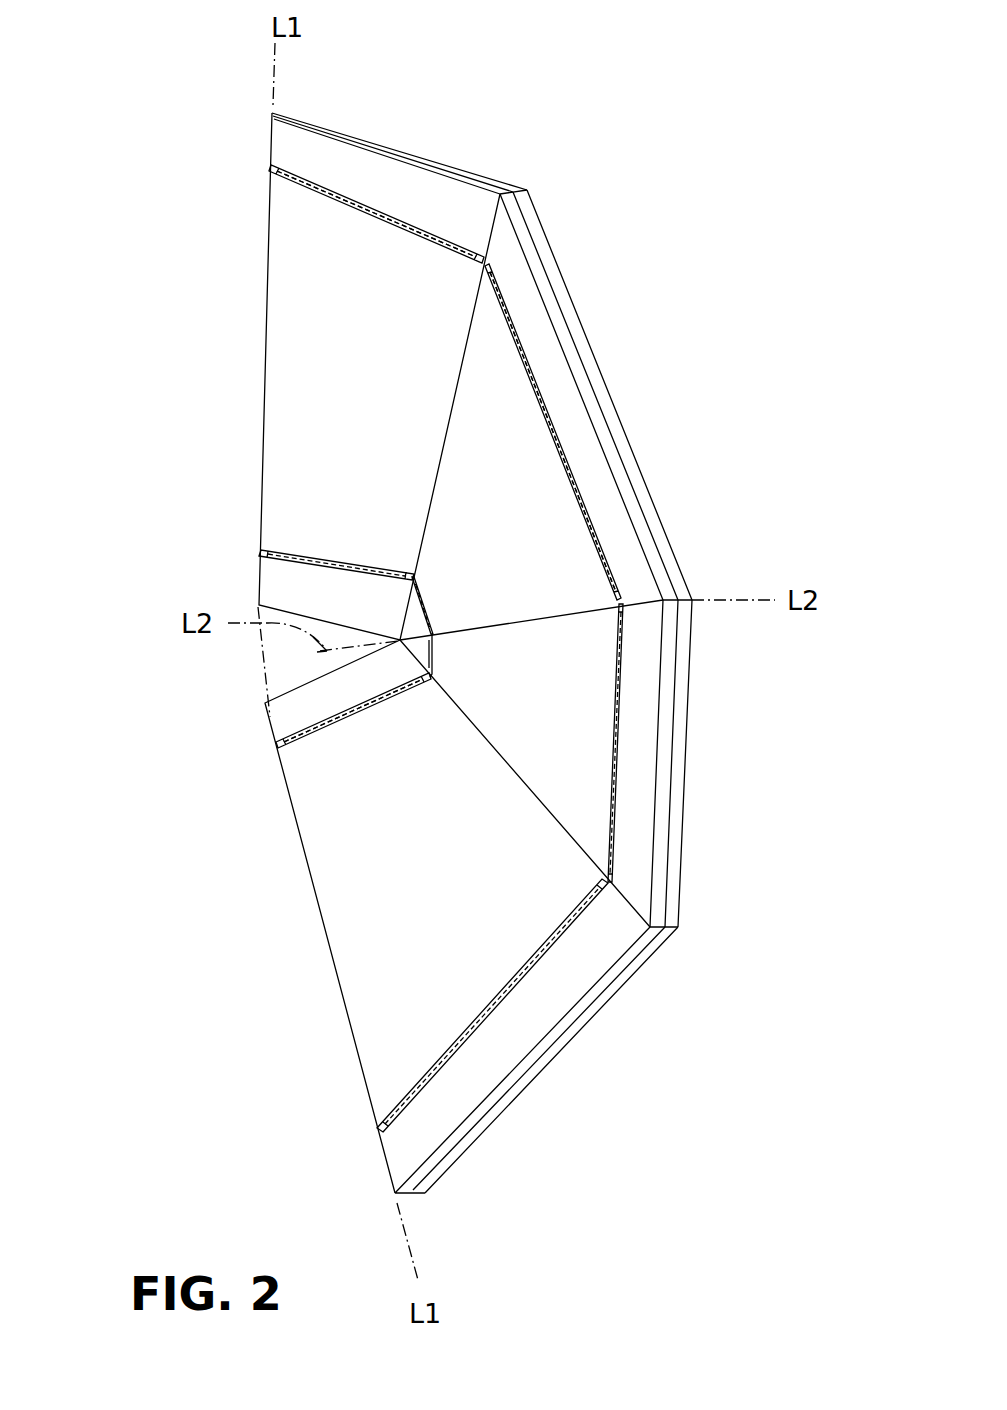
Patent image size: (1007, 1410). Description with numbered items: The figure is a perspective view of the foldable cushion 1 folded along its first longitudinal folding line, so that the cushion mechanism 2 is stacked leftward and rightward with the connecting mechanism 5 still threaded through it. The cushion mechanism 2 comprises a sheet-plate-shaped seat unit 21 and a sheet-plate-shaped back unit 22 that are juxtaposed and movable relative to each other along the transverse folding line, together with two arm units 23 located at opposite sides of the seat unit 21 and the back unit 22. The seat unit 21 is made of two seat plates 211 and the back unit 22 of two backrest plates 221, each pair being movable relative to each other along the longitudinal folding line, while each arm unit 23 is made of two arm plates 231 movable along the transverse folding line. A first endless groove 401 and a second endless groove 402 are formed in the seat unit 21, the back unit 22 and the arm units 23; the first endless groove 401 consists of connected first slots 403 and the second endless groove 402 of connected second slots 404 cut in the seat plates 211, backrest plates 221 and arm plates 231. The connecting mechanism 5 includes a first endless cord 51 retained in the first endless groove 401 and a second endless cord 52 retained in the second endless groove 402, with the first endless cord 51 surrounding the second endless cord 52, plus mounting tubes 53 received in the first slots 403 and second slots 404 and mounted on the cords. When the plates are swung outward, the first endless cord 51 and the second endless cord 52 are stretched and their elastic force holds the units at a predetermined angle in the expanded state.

The foldable cushion 1 is at (113, 153).
The cushion mechanism 2 is at (563, 177).
The connecting mechanism 5 is at (393, 205).
The seat unit 21 is at (315, 893).
The back unit 22 is at (263, 328).
The arm unit 23 is at (623, 407).
The first endless cord 51 is at (533, 380).
The second endless cord 52 is at (375, 700).
The mounting tube 53 is at (612, 890).
The seat plate 211 is at (533, 1070).
The backrest plate 221 is at (380, 150).
The arm plate 231 is at (685, 628).
The first endless groove 401 is at (522, 330).
The second endless groove 402 is at (330, 727).
The first slot 403 is at (550, 250).
The second slot 404 is at (425, 620).